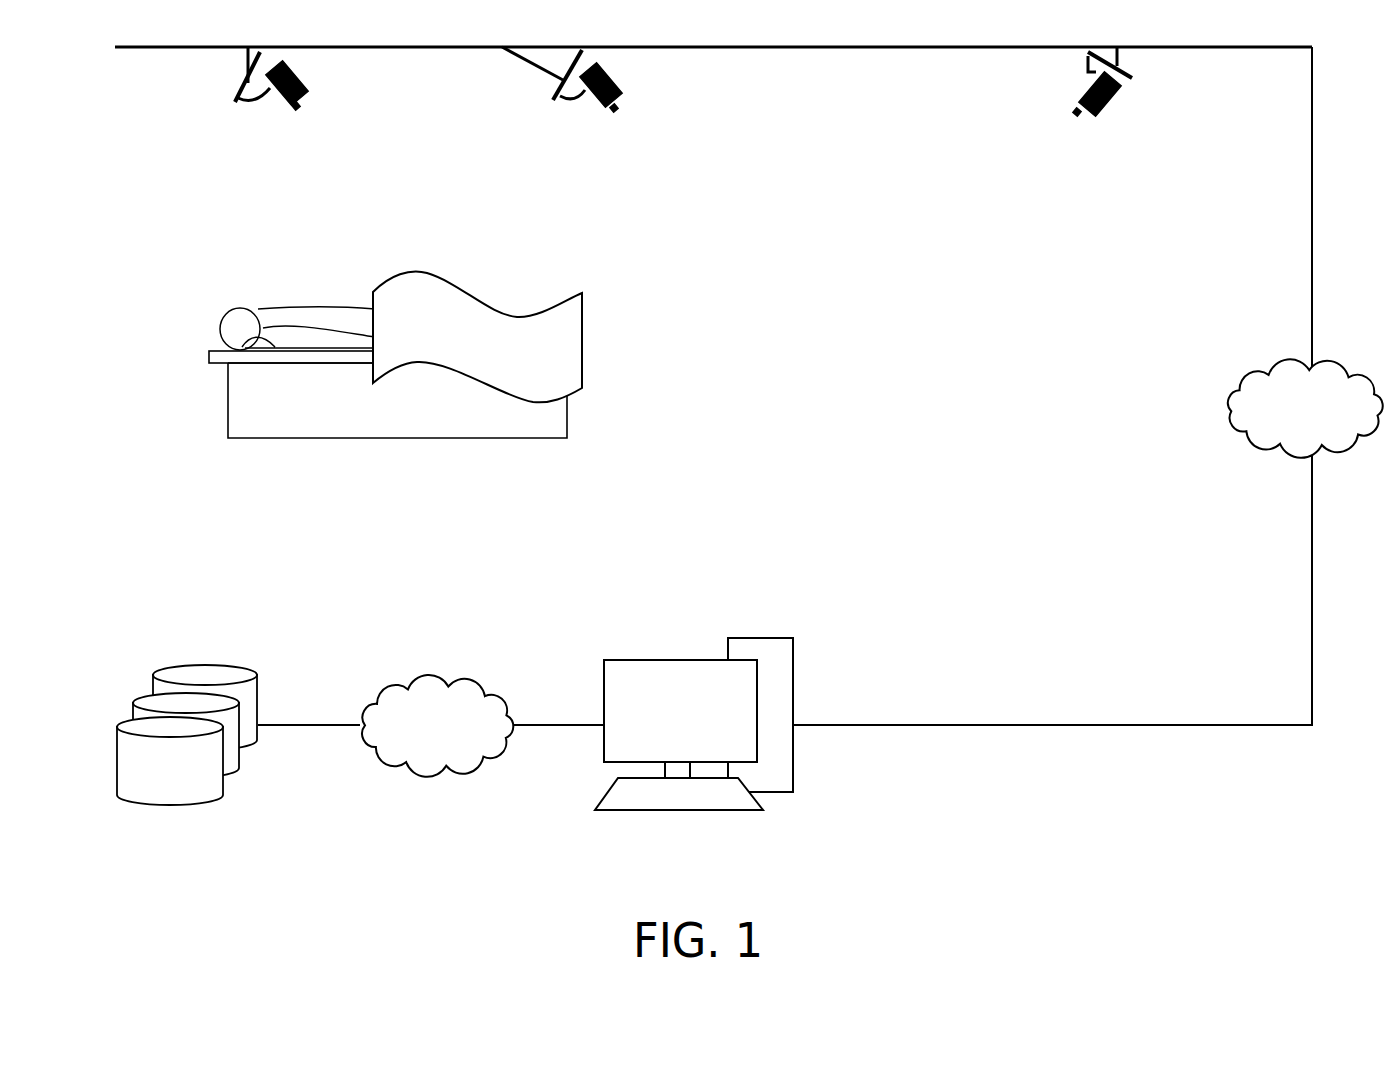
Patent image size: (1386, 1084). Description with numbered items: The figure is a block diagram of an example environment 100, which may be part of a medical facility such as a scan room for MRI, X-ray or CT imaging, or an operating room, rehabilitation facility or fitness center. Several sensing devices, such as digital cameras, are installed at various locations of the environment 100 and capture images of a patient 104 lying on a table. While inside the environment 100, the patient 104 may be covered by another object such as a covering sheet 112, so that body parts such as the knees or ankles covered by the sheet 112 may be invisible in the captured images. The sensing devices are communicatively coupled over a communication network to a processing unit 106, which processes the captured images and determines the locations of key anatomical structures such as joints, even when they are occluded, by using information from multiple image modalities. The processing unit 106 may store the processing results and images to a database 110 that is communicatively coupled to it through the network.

The environment 100 is at (870, 348).
The patient 104 is at (316, 318).
The processing unit 106 is at (642, 672).
The database 110 is at (210, 773).
The covering sheet 112 is at (520, 320).